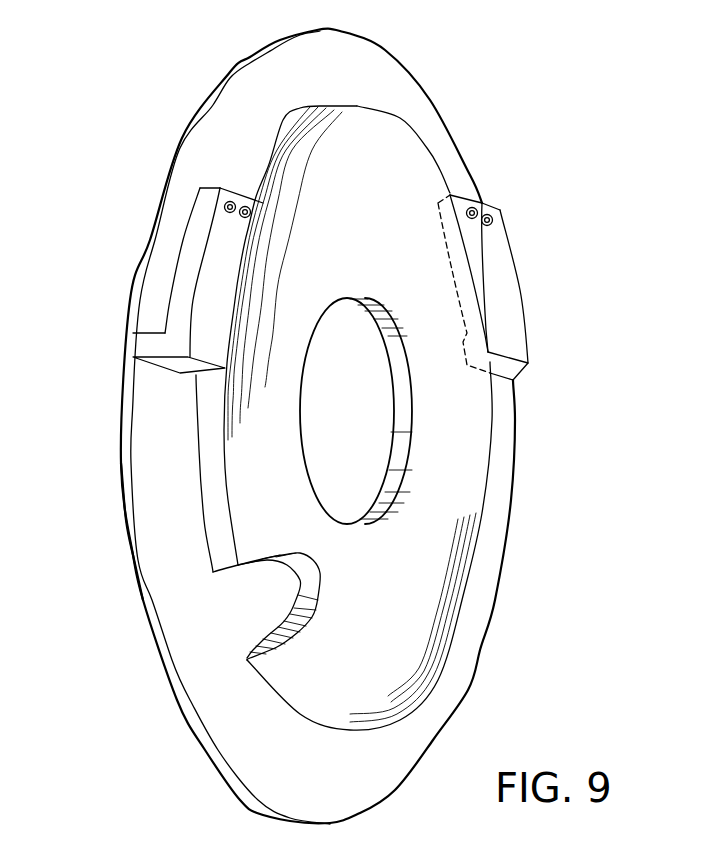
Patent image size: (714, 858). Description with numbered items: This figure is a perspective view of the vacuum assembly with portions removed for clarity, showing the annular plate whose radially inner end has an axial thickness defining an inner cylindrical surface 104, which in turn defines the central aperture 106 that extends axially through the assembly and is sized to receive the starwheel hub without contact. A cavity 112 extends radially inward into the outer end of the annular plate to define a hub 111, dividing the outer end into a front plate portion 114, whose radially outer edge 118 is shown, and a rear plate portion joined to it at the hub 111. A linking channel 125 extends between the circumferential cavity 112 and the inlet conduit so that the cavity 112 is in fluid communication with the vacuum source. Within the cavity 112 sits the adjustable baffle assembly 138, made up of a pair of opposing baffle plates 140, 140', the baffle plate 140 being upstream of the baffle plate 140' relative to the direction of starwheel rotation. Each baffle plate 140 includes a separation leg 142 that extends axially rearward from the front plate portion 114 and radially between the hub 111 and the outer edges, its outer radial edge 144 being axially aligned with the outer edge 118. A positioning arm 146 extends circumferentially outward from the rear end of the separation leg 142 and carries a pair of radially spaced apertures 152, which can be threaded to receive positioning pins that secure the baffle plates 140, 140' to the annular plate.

The cavity 112 is at (338, 72).
The front plate portion 114 is at (177, 138).
The radially outer edge 118 is at (135, 555).
The central aperture 106 is at (357, 341).
The hub 111 is at (363, 265).
The inner cylindrical surface 104 is at (400, 398).
The baffle plate 140 is at (136, 272).
The baffle plate 140' is at (527, 287).
The outer radial edge 144 is at (183, 230).
The positioning arm 146 is at (207, 202).
The adjustable baffle assembly 138 is at (134, 334).
The separation leg 142 is at (181, 367).
The apertures 152 is at (245, 206).
The linking channel 125 is at (305, 628).